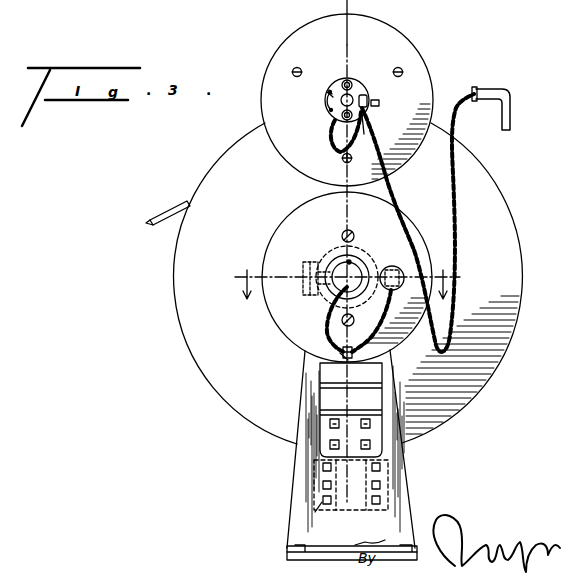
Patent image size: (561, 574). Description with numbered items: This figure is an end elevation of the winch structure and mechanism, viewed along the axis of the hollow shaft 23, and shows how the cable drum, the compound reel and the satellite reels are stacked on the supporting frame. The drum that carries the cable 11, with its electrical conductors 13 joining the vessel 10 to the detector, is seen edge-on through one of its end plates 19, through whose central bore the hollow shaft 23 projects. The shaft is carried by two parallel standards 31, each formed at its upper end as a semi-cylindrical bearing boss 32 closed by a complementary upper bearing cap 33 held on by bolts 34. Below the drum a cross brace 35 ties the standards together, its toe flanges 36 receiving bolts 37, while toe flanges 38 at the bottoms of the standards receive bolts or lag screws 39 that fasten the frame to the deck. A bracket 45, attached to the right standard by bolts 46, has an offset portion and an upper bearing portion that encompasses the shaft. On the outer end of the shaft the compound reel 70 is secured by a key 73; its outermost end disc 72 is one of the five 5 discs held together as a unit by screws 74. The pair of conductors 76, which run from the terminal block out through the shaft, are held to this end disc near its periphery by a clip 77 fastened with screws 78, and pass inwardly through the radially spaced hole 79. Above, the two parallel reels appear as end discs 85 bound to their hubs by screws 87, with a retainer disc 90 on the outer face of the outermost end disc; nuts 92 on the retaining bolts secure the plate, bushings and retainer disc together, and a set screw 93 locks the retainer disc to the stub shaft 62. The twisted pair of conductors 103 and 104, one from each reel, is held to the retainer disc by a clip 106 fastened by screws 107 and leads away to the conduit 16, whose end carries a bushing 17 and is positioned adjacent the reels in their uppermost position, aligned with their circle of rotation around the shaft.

The five discs 5 is at (362, 8).
The vessel 10 is at (344, 276).
The cable 11 is at (168, 208).
The electrical conductors 13 is at (148, 223).
The conduit 16 is at (514, 116).
The bushing 17 is at (481, 88).
The end plate 19 is at (500, 225).
The hollow shaft 23 is at (332, 263).
The standard 31 is at (400, 485).
The bearing boss 32 is at (304, 290).
The upper bearing cap 33 is at (366, 259).
The bolts 34 is at (307, 262).
The cross brace 35 is at (333, 517).
The toe flanges 36 is at (395, 468).
The bolts 37 is at (321, 500).
The toe flanges 38 is at (290, 552).
The bolts or lag screws 39 is at (318, 550).
The bracket 45 is at (320, 373).
The bolts 46 is at (331, 445).
The stub shaft 62 is at (352, 93).
The compound reel 70 is at (266, 321).
The outermost end disc 72 is at (285, 216).
The key 73 is at (350, 262).
The screws 74 is at (343, 233).
The conductors 76 is at (342, 320).
The clip 77 is at (340, 354).
The screws 78 is at (351, 359).
The radially spaced hole 79 is at (402, 267).
The end disc 85 is at (392, 42).
The screws 87 is at (294, 70).
The retainer disc 90 is at (327, 104).
The nuts 92 is at (344, 82).
The set screw 93 is at (380, 103).
The conductor 103 is at (326, 96).
The conductor 104 is at (329, 118).
The clip 106 is at (367, 102).
The screws 107 is at (369, 134).